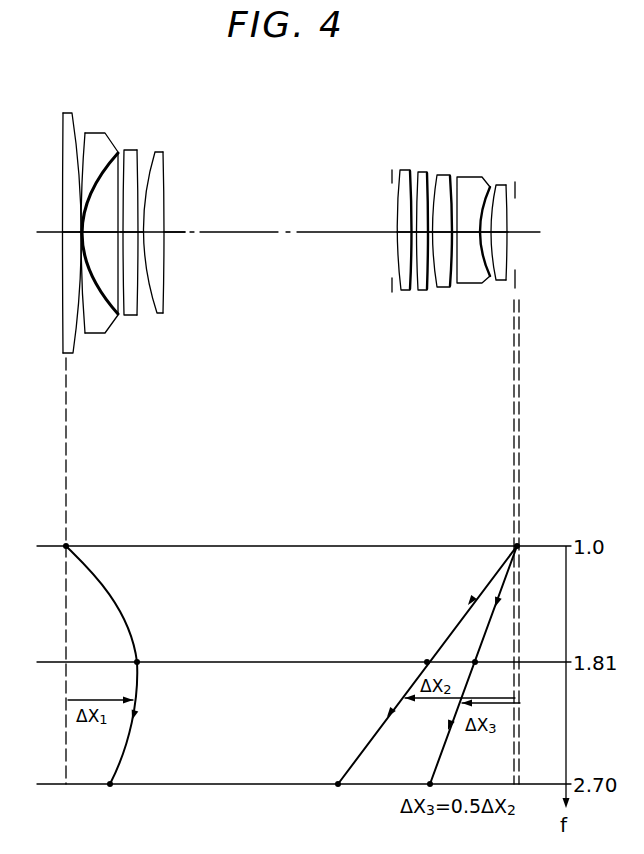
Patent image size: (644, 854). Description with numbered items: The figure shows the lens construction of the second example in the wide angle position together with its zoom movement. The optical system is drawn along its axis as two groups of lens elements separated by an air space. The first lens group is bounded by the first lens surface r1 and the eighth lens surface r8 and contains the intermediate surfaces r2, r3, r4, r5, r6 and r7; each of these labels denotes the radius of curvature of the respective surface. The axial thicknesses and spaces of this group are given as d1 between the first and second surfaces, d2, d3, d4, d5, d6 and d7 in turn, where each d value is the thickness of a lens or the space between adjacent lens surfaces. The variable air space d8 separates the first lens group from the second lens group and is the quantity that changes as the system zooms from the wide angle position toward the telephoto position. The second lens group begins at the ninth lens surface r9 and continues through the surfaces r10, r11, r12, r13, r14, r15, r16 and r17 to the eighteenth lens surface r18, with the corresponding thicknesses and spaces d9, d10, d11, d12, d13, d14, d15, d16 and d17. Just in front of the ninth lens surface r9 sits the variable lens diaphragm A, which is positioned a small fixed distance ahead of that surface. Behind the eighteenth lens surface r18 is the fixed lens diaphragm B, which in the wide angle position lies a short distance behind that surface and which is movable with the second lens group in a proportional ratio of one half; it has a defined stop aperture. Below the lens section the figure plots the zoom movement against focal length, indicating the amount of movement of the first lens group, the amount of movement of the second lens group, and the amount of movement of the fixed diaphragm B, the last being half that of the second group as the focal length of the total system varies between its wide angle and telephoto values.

The first lens surface r1 is at (65, 115).
The second lens surface r2 is at (75, 113).
The third lens surface r3 is at (84, 133).
The fourth lens surface r4 is at (116, 151).
The fifth lens surface r5 is at (123, 150).
The sixth lens surface r6 is at (137, 150).
The seventh lens surface r7 is at (155, 152).
The eighth lens surface r8 is at (163, 152).
The ninth lens surface r9 is at (398, 172).
The tenth lens surface r10 is at (408, 172).
The eleventh lens surface r11 is at (417, 172).
The twelfth lens surface r12 is at (427, 172).
The thirteenth lens surface r13 is at (437, 175).
The fourteenth lens surface r14 is at (450, 175).
The fifteenth lens surface r15 is at (457, 177).
The sixteenth lens surface r16 is at (487, 187).
The seventeenth lens surface r17 is at (496, 185).
The eighteenth lens surface r18 is at (509, 183).
The thickness between first and second lens surfaces d1 is at (65, 241).
The space between second and third lens surfaces d2 is at (78, 251).
The thickness between third and fourth lens surfaces d3 is at (83, 263).
The space between fourth and fifth lens surfaces d4 is at (89, 236).
The thickness between fifth and sixth lens surfaces d5 is at (132, 258).
The space between sixth and seventh lens surfaces d6 is at (140, 243).
The thickness between seventh and eighth lens surfaces d7 is at (150, 236).
The space between eighth and ninth lens surfaces d8 is at (267, 233).
The thickness between ninth and tenth lens surfaces d9 is at (403, 233).
The space between tenth and eleventh lens surfaces d10 is at (413, 237).
The thickness between eleventh and twelfth lens surfaces d11 is at (420, 287).
The space between twelfth and thirteenth lens surfaces d12 is at (425, 290).
The thickness between thirteenth and fourteenth lens surfaces d13 is at (441, 286).
The space between fourteenth and fifteenth lens surfaces d14 is at (460, 283).
The thickness between fifteenth and sixteenth lens surfaces d15 is at (493, 282).
The space between sixteenth and seventeenth lens surfaces d16 is at (506, 252).
The thickness between seventeenth and eighteenth lens surfaces d17 is at (505, 235).
The variable lens diaphragm A is at (390, 173).
The fixed lens diaphragm B is at (517, 190).